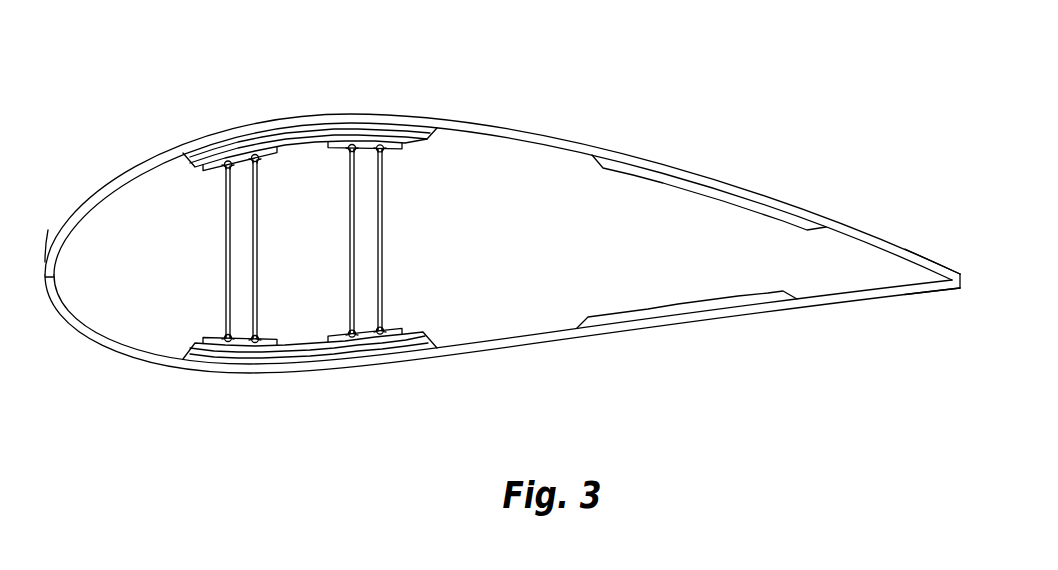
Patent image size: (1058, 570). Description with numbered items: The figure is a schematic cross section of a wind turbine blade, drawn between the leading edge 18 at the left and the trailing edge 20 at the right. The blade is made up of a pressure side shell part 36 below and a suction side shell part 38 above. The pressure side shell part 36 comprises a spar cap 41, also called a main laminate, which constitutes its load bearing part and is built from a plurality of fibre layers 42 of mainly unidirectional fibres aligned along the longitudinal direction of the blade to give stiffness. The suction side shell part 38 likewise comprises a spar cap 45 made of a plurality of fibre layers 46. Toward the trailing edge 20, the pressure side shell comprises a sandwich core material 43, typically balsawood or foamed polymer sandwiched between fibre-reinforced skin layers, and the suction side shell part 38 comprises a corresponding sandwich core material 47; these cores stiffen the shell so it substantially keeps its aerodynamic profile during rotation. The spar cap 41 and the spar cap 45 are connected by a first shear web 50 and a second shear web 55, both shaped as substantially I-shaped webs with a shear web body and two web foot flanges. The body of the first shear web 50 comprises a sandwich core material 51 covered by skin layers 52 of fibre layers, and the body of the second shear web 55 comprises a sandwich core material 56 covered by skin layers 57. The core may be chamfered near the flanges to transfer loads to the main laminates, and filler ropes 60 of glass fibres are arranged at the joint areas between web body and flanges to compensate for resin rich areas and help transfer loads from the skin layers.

The leading edge 18 is at (47, 267).
The trailing edge 20 is at (960, 273).
The pressure side shell part 36 is at (554, 342).
The suction side shell part 38 is at (542, 134).
The spar cap 41 is at (310, 383).
The fibre layers 42 is at (300, 350).
The sandwich core material 43 is at (708, 308).
The spar cap 45 is at (310, 98).
The fibre layers 46 is at (377, 135).
The sandwich core material 47 is at (698, 178).
The first shear web 50 is at (257, 246).
The sandwich core material 51 is at (252, 272).
The skin layers 52 is at (258, 200).
The second shear web 55 is at (392, 242).
The sandwich core material 56 is at (383, 270).
The skin layers 57 is at (383, 210).
The filler ropes 60 is at (349, 152).